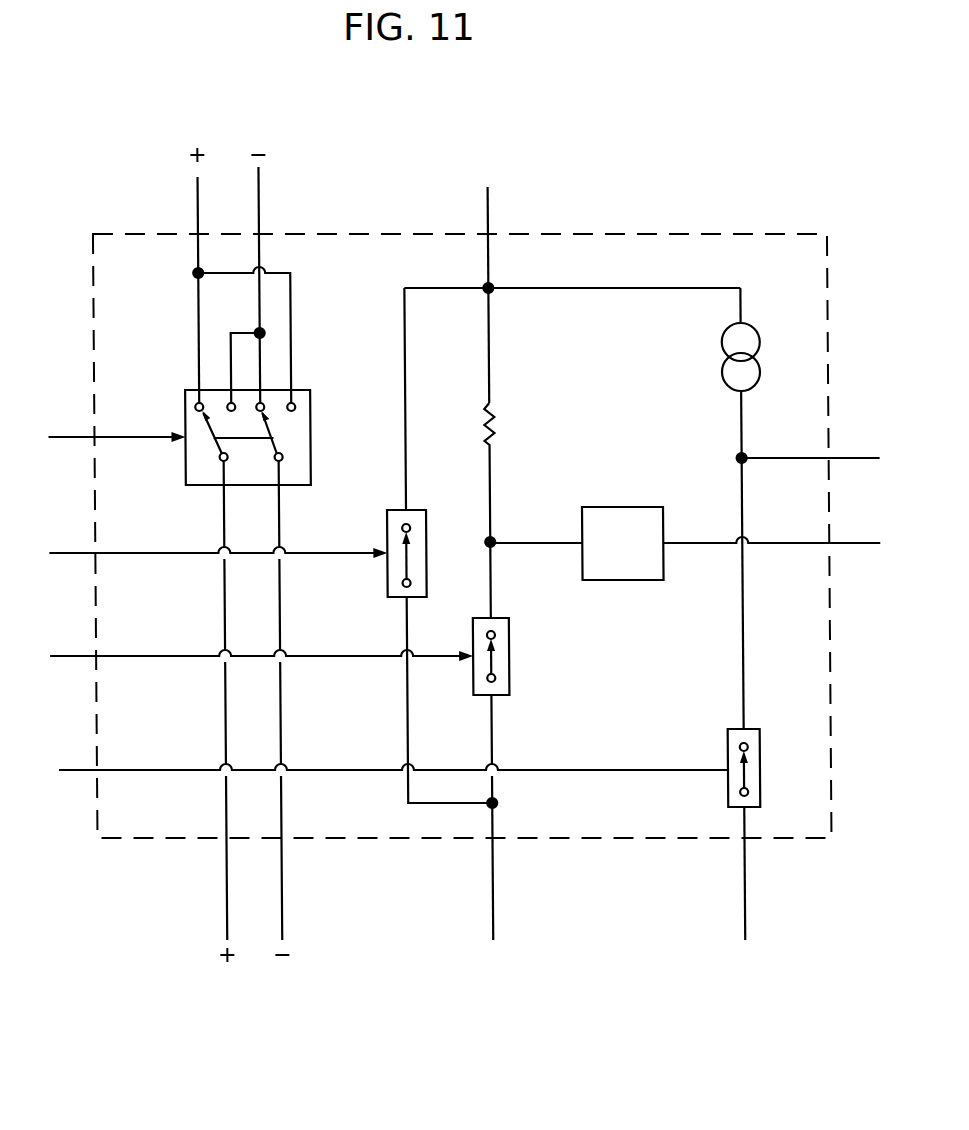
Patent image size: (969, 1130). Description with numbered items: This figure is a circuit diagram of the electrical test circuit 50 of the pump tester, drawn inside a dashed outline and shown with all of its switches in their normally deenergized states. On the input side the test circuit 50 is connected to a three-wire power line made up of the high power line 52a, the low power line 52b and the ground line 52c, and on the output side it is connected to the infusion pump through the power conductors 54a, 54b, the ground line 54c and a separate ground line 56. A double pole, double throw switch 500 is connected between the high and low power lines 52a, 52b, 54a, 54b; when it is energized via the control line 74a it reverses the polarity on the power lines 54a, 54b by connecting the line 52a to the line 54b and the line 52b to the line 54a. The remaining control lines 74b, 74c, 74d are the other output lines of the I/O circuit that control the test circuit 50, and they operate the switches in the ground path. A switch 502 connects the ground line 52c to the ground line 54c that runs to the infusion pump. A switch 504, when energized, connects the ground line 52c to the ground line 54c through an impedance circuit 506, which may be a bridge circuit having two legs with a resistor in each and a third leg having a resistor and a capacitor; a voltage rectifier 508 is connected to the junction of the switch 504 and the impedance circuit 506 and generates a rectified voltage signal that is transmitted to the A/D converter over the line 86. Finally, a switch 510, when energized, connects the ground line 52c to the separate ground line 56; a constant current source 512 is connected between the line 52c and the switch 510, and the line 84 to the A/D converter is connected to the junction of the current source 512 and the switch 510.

The electrical test circuit 50 is at (800, 234).
The high power line 52a is at (198, 199).
The low power line 52b is at (259, 207).
The ground line 52c is at (488, 212).
The power conductor 54a is at (222, 870).
The power conductor 54b is at (277, 893).
The ground line 54c is at (488, 900).
The separate ground line 56 is at (740, 907).
The control line 74a is at (67, 436).
The control line 74b is at (67, 552).
The control line 74c is at (67, 655).
The control line 74d is at (67, 769).
The input line to A/D converter 84 is at (855, 457).
The input line to A/D converter 86 is at (862, 543).
The double pole, double throw switch 500 is at (184, 395).
The switch 502 is at (392, 510).
The switch 504 is at (506, 667).
The impedance circuit 506 is at (496, 419).
The voltage rectifier 508 is at (621, 507).
The switch 510 is at (756, 786).
The constant current source 512 is at (750, 328).